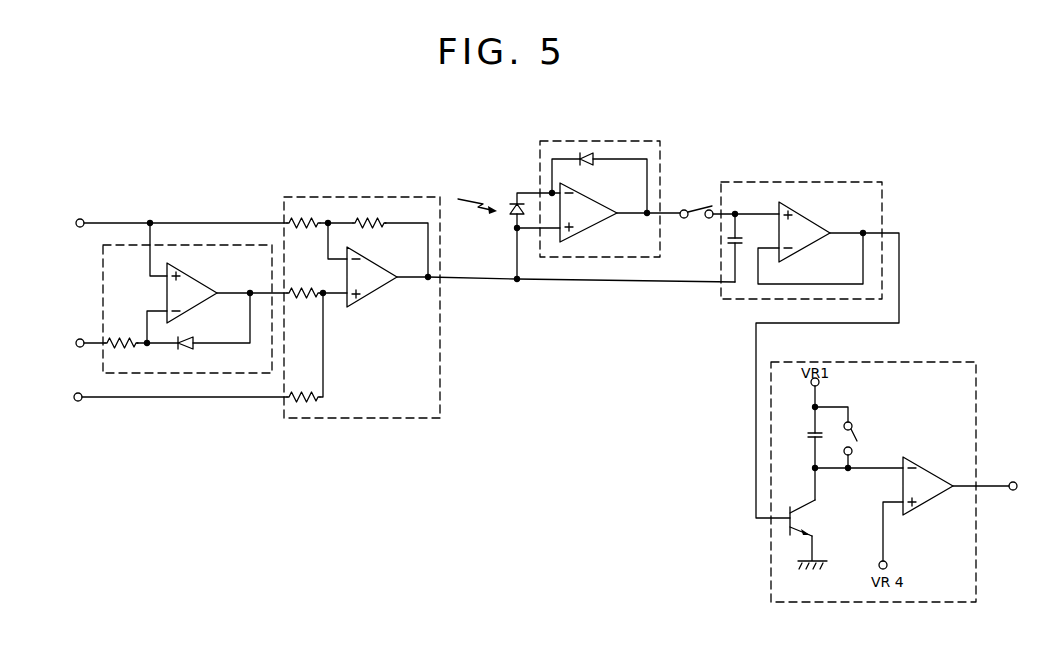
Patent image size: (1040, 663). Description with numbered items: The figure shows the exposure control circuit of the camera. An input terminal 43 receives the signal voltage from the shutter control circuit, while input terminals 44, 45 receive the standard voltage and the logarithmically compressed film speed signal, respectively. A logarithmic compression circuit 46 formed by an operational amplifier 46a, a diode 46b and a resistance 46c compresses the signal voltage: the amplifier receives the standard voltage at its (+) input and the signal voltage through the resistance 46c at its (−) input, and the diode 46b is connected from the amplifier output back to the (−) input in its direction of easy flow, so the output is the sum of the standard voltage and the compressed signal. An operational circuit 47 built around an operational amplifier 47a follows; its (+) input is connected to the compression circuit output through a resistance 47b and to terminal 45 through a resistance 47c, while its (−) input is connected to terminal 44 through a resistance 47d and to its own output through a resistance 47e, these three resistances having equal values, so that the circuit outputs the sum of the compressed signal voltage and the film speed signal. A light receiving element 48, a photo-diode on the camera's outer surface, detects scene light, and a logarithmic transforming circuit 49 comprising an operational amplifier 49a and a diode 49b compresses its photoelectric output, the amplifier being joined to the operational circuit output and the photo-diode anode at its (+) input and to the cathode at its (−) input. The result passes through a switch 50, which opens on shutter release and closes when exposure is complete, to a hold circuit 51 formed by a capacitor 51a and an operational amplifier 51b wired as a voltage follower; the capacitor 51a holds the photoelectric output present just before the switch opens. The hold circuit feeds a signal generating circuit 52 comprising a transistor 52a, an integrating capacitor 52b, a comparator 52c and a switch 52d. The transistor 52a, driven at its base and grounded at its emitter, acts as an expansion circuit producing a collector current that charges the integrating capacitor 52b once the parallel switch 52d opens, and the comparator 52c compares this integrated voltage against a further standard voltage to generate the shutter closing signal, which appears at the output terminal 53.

The input terminal 43 is at (79, 338).
The input terminal 44 is at (80, 218).
The input terminal 45 is at (79, 401).
The logarithmic compression circuit 46 is at (199, 244).
The operational amplifier 46a is at (207, 287).
The diode 46b is at (194, 339).
The resistance 46c is at (120, 340).
The operational circuit 47 is at (374, 196).
The operational amplifier 47a is at (380, 289).
The resistance 47b is at (306, 299).
The resistance 47c is at (305, 393).
The resistance 47d is at (305, 230).
The resistance 47e is at (378, 229).
The light receiving element 48 is at (512, 215).
The logarithmic transforming circuit 49 is at (622, 140).
The operational amplifier 49a is at (592, 226).
The diode 49b is at (590, 165).
The switch 50 is at (707, 205).
The hold circuit 51 is at (797, 181).
The capacitor 51a is at (749, 245).
The operational amplifier 51b is at (810, 244).
The signal generating circuit 52 is at (946, 361).
The transistor 52a is at (802, 519).
The integrating capacitor 52b is at (807, 436).
The comparator 52c is at (930, 500).
The switch 52d is at (859, 434).
The output terminal 53 is at (1013, 481).